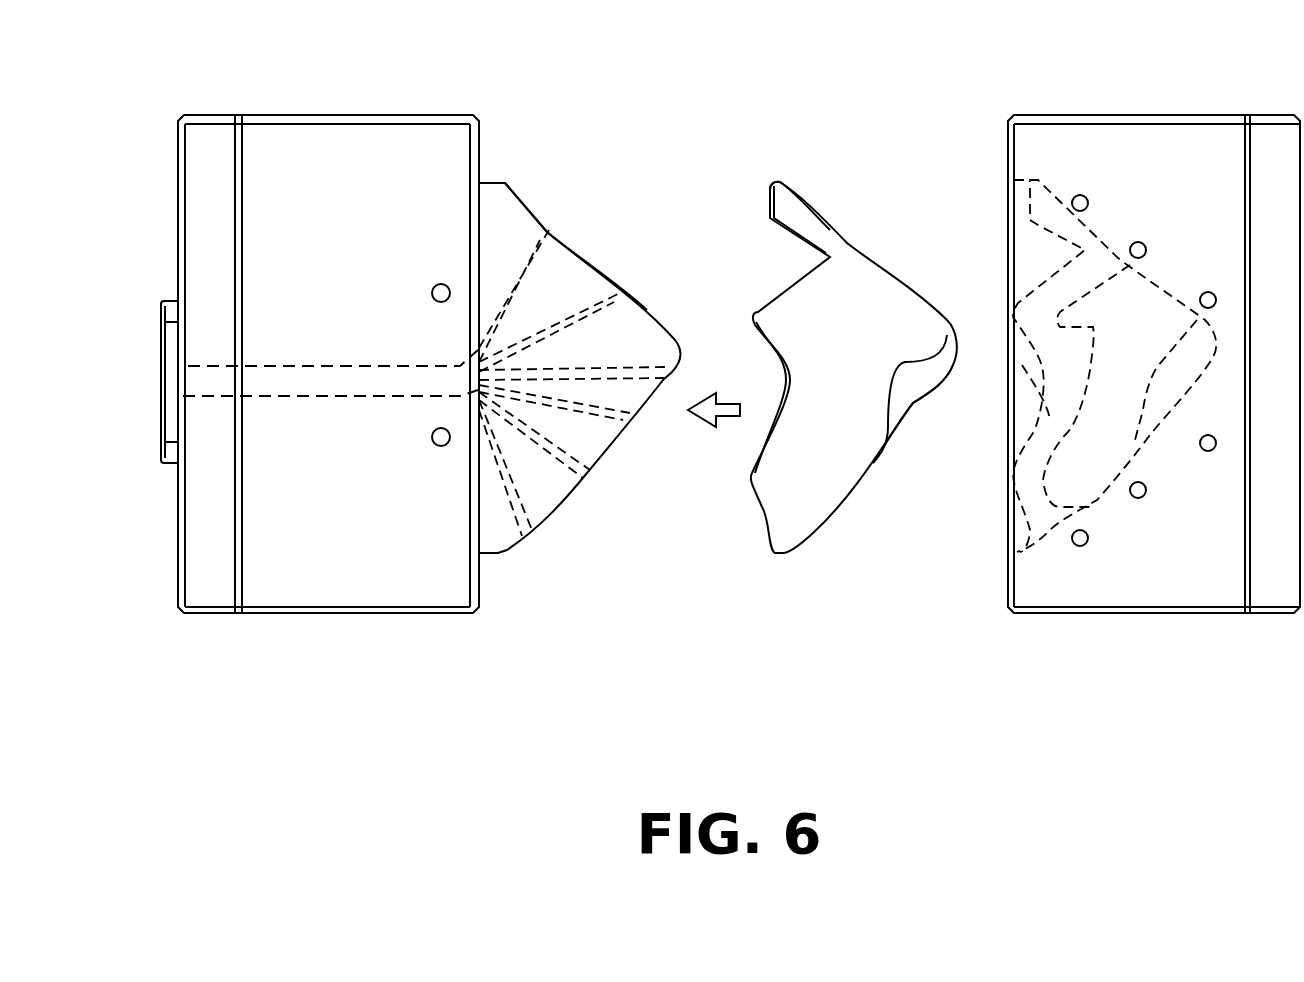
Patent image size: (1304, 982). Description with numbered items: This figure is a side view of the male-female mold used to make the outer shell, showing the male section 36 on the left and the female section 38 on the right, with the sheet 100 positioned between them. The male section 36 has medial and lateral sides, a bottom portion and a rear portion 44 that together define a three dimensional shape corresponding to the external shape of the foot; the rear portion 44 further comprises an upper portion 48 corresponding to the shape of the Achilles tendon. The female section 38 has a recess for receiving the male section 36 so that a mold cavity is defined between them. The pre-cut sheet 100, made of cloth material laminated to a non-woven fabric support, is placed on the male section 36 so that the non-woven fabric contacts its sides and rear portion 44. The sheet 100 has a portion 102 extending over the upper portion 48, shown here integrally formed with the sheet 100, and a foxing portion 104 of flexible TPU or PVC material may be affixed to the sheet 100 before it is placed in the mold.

The male section 36 is at (590, 437).
The female section 38 is at (1087, 115).
The rear portion 44 is at (597, 268).
The upper portion 48 is at (527, 193).
The sheet 100 is at (870, 265).
The portion 102 is at (797, 215).
The foxing portion 104 is at (917, 393).